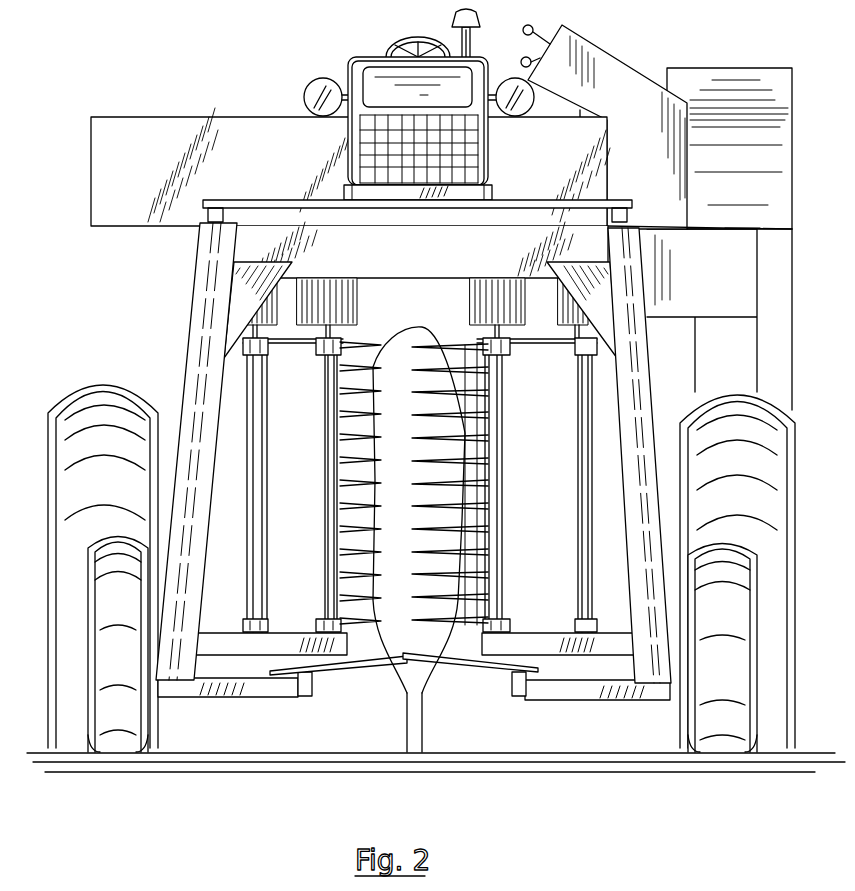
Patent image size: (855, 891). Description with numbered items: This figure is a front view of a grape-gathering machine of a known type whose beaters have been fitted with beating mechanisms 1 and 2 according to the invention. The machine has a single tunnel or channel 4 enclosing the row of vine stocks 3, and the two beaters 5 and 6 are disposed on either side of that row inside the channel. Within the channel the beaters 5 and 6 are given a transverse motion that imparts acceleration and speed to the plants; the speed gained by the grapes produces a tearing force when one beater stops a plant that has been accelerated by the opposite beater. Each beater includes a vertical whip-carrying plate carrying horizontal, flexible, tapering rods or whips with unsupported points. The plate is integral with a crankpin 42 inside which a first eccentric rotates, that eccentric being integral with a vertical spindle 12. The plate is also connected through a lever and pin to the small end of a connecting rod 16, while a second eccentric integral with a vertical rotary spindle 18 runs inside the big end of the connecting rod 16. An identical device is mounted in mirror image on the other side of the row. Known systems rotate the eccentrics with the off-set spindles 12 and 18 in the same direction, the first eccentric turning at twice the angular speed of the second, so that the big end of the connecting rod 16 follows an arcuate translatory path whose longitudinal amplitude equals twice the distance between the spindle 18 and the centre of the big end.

The beating mechanism 1 is at (330, 476).
The beating mechanism 2 is at (487, 485).
The row of vine stocks 3 is at (413, 716).
The tunnel or channel 4 is at (430, 302).
The beater 5 is at (348, 478).
The beater 6 is at (479, 500).
The vertical spindle 12 is at (325, 566).
The connecting rod 16 is at (268, 348).
The vertical rotary spindle 18 is at (248, 527).
The crankpin 42 is at (336, 346).